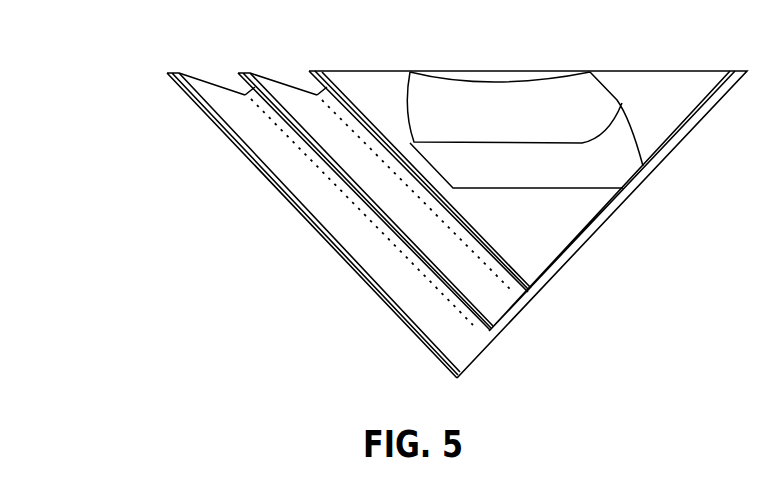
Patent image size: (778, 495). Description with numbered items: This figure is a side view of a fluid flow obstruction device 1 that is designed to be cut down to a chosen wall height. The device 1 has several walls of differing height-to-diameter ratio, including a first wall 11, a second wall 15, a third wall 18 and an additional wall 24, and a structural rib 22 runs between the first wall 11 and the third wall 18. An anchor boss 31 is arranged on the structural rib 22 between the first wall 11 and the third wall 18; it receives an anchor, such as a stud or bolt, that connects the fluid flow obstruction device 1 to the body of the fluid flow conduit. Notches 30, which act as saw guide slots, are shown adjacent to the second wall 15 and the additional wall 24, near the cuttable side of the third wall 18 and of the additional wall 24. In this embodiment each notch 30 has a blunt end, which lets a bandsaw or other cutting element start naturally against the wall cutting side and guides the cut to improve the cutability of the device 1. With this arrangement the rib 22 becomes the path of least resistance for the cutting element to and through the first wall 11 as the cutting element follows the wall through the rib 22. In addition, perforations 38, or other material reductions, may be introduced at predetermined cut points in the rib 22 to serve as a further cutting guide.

The fluid flow obstruction device 1 is at (102, 74).
The first wall 11 is at (612, 212).
The second wall 15 is at (360, 268).
The third wall 18 is at (511, 265).
The structural rib 22 is at (207, 90).
The additional wall 24 is at (472, 300).
The notch 30 is at (245, 92).
The anchor boss 31 is at (590, 92).
The perforations 38 is at (327, 175).